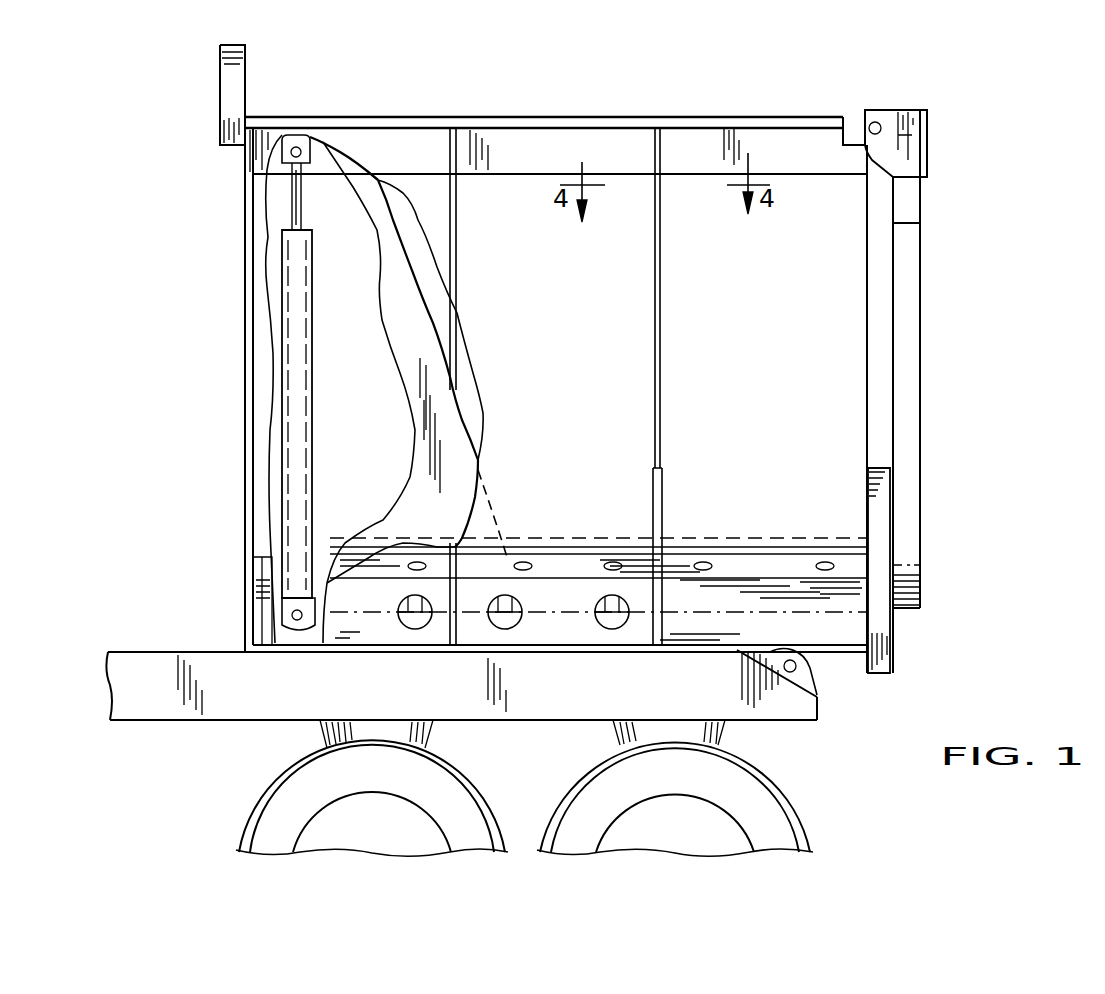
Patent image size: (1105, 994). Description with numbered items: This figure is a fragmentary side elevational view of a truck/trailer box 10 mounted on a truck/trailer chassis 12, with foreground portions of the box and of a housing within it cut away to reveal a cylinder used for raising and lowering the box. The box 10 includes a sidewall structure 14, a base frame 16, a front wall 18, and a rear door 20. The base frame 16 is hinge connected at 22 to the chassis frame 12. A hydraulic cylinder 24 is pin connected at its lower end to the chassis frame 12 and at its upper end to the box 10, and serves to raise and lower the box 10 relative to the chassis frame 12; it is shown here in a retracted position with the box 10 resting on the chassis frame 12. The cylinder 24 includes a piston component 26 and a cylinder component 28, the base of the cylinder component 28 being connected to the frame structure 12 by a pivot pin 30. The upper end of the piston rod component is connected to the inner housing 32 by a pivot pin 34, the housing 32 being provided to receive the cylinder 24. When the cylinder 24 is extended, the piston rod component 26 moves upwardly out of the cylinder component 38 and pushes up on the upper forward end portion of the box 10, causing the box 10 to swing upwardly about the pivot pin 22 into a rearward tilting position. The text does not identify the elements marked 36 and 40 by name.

The truck/trailer box 10 is at (1000, 302).
The truck/trailer chassis 12 is at (228, 722).
The sidewall structure 14 is at (838, 421).
The base frame 16 is at (567, 627).
The front wall 18 is at (260, 323).
The rear door 20 is at (910, 498).
The hinge connection 22 is at (803, 673).
The hydraulic cylinder 24 is at (243, 346).
The piston component 26 is at (283, 207).
The cylinder component 28 is at (297, 503).
The pivot pin 30 is at (292, 615).
The housing 32 is at (383, 222).
The pivot pin 34 is at (297, 143).
The vertical post 36 is at (433, 180).
The cylinder component 38 is at (565, 354).
The second compartment 40 is at (784, 354).